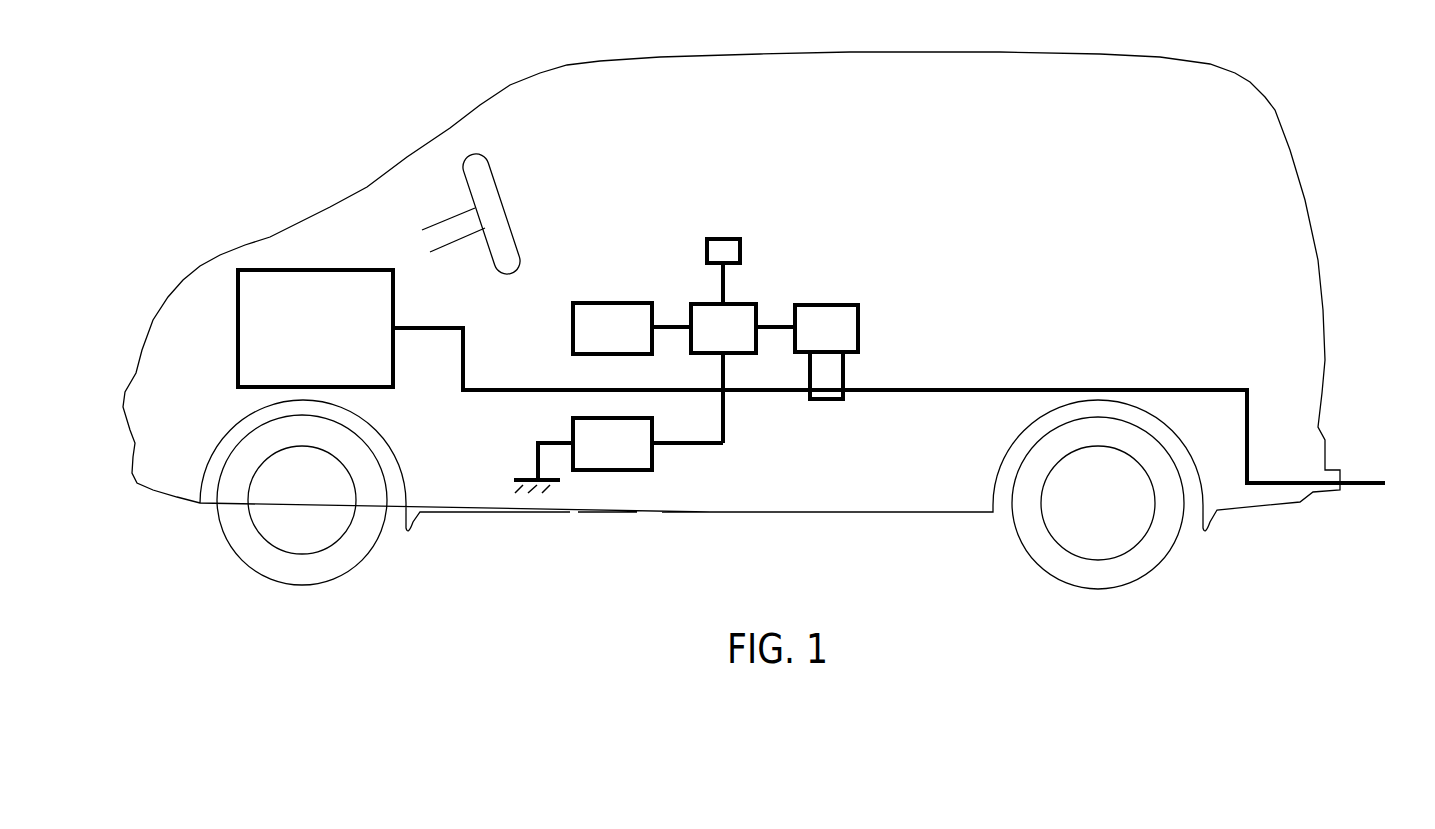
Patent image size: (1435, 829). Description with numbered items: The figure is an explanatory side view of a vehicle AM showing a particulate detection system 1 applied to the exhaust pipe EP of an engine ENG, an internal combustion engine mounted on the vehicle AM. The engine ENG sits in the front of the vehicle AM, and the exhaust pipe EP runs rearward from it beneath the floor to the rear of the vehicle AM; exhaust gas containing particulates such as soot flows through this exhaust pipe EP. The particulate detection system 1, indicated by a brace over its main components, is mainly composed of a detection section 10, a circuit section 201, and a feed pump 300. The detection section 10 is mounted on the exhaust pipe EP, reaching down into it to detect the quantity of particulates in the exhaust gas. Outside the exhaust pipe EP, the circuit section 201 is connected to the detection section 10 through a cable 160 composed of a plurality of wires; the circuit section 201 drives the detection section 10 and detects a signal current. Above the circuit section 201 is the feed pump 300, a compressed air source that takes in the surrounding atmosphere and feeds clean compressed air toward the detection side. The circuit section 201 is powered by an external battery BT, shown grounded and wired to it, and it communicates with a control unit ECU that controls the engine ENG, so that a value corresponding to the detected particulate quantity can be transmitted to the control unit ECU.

The particulate detection system 1 is at (863, 198).
The feed pump 300 is at (717, 238).
The circuit section 201 is at (749, 304).
The detection section 10 is at (842, 305).
The cable 160 is at (768, 332).
The control unit ECU is at (632, 328).
The external battery BT is at (618, 455).
The engine ENG is at (278, 285).
The exhaust pipe EP is at (1003, 390).
The vehicle AM is at (1280, 118).